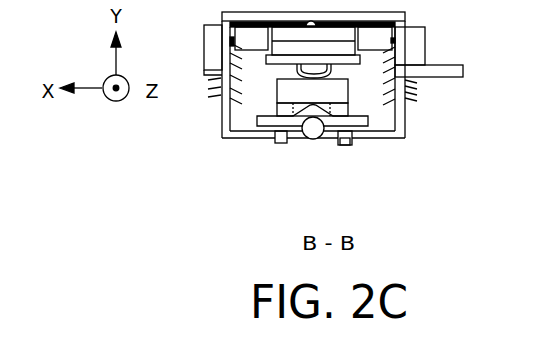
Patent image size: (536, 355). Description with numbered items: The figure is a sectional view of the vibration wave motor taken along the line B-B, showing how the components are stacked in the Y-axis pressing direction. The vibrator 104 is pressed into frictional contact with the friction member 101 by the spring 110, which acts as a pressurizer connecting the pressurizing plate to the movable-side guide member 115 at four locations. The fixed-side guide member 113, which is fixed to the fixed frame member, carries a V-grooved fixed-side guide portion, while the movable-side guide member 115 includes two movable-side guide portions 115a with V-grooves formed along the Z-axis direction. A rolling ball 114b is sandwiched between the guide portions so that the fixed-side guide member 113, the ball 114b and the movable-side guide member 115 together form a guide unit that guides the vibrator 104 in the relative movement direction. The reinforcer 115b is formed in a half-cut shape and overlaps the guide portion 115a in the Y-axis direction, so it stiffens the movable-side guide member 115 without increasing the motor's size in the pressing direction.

The friction member 101 is at (341, 93).
The vibrator 104 is at (272, 72).
The spring 110 is at (418, 86).
The fixed-side guide member 113 is at (229, 135).
The ball 114b is at (277, 143).
The movable-side guide member 115 is at (383, 139).
The movable-side guide portion 115a is at (322, 142).
The reinforcer 115b is at (352, 142).